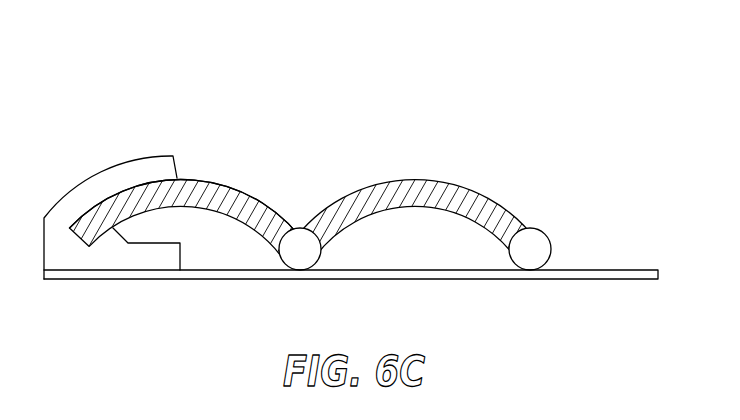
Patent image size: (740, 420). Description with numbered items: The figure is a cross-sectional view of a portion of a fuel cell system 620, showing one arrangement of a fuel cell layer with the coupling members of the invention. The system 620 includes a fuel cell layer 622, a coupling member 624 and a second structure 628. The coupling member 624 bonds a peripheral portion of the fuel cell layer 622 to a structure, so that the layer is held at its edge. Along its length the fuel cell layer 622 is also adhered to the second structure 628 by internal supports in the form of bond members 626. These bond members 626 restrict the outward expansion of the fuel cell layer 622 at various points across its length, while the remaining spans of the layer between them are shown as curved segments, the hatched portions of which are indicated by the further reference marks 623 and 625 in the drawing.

The fuel cell system 620 is at (338, 213).
The fuel cell layer 622 is at (222, 212).
The outer layer of curved member 623 is at (218, 182).
The coupling member 624 is at (105, 170).
The curved member 625 is at (420, 178).
The bond members 626 is at (307, 257).
The second structure 628 is at (617, 270).